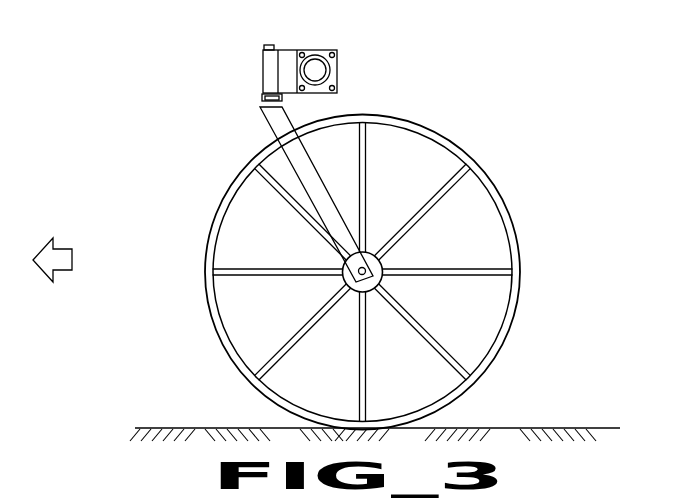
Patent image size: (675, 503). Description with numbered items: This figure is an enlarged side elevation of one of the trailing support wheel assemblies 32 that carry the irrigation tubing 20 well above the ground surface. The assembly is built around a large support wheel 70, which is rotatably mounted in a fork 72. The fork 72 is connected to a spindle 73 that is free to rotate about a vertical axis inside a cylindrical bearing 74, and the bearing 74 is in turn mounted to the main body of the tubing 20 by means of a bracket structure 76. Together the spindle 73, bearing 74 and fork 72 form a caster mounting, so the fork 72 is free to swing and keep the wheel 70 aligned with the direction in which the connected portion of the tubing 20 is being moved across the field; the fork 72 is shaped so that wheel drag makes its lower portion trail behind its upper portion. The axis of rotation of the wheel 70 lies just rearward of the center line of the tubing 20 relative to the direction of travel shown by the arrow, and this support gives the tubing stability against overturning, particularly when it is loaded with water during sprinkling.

The tubing 20 is at (292, 50).
The trailing support wheel assembly 32 is at (392, 270).
The support wheel 70 is at (515, 270).
The fork 72 is at (280, 125).
The spindle 73 is at (263, 46).
The cylindrical bearing 74 is at (270, 70).
The bracket structure 76 is at (286, 55).